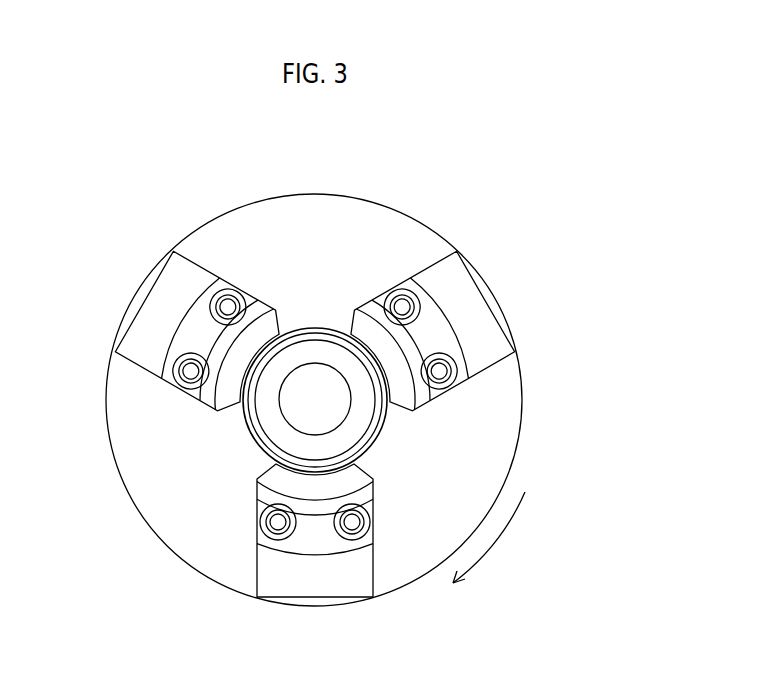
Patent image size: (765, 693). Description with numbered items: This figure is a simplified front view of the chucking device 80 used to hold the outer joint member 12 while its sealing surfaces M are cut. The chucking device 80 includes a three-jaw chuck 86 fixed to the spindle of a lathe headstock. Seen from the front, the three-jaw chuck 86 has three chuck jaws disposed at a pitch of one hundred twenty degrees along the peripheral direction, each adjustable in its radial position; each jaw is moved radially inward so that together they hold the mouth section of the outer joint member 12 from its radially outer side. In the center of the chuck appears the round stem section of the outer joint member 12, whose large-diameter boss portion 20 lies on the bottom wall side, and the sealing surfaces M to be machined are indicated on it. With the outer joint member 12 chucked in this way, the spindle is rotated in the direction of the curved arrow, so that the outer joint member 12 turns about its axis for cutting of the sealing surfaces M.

The outer joint member 12 is at (310, 327).
The boss portion 20 is at (282, 418).
The sealing surfaces M is at (347, 418).
The chucking device 80 is at (540, 435).
The three-jaw chuck 86 is at (405, 206).